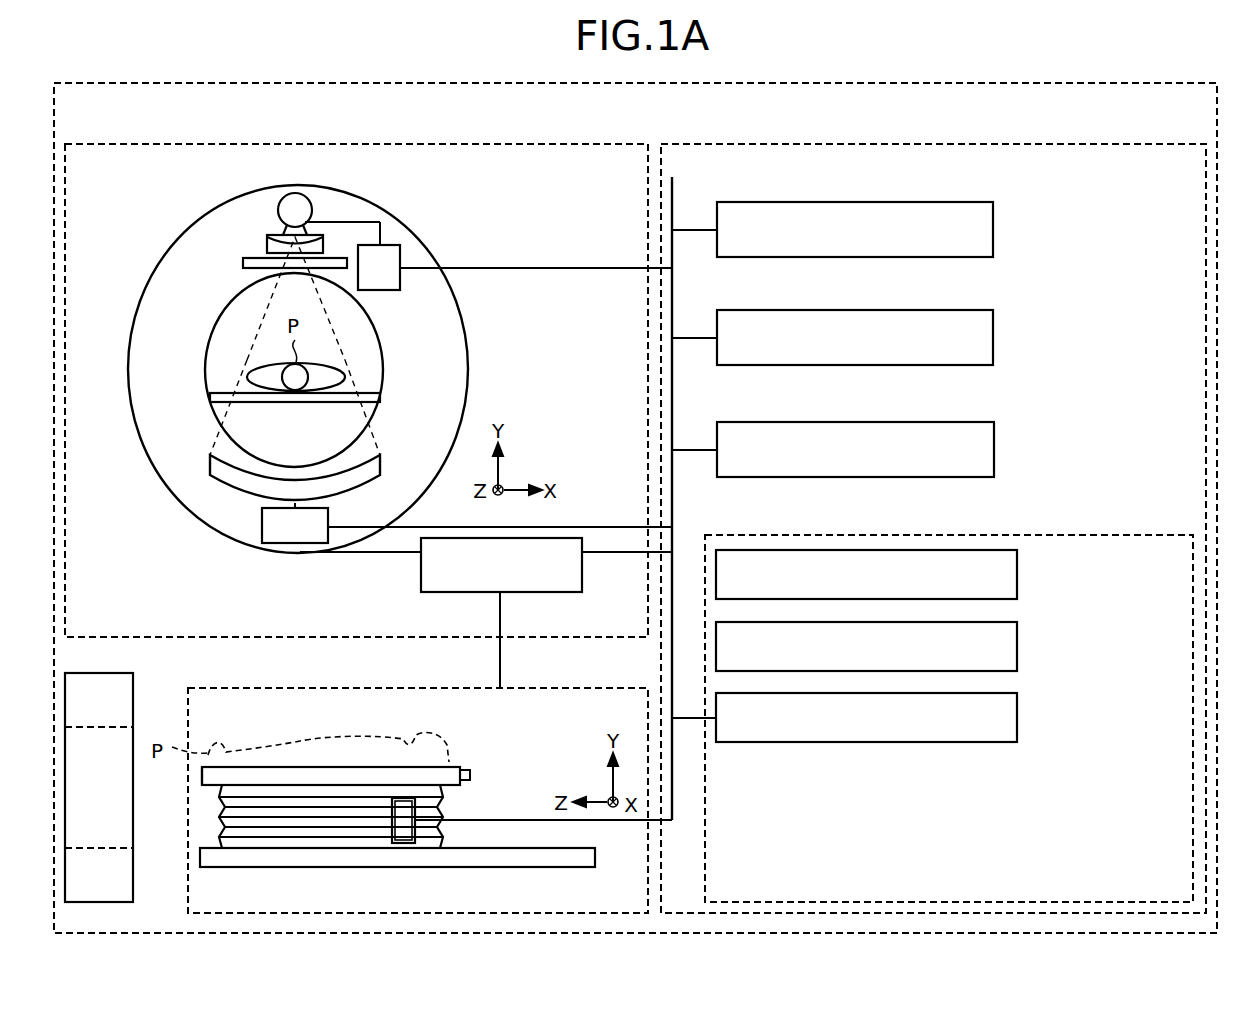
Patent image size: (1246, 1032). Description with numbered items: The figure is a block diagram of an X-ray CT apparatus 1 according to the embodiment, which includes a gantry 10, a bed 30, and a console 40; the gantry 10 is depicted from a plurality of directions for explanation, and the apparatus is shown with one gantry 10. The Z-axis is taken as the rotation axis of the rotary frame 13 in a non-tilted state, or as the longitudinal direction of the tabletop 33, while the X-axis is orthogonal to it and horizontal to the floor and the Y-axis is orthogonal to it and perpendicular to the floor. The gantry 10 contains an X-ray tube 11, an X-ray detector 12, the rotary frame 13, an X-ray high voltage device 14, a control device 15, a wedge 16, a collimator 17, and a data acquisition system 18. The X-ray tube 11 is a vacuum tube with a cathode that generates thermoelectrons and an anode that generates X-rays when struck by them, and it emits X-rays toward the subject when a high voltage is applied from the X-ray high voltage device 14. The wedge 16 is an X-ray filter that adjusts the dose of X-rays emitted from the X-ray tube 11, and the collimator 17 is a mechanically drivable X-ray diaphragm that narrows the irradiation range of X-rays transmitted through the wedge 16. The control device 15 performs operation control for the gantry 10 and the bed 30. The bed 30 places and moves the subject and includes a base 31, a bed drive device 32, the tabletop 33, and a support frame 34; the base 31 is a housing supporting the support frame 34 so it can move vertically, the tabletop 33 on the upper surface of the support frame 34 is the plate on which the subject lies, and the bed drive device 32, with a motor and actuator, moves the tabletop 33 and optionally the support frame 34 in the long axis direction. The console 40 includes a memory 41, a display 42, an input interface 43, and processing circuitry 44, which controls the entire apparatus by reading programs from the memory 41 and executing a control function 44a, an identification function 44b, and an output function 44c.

The X-ray CT apparatus 1 is at (1140, 82).
The gantry 10 is at (578, 144).
The X-ray tube 11 is at (280, 212).
The X-ray detector 12 is at (218, 482).
The rotary frame 13 is at (362, 198).
The X-ray high voltage device 14 is at (392, 290).
The control device 15 is at (421, 579).
The wedge 16 is at (267, 245).
The collimator 17 is at (243, 263).
The data acquisition system (DAS) 18 is at (262, 527).
The bed 30 is at (582, 688).
The base 31 is at (222, 812).
The bed drive device 32 is at (440, 813).
The tabletop 33 is at (216, 412).
The support frame 34 is at (202, 776).
The console 40 is at (913, 144).
The memory 41 is at (993, 229).
The display 42 is at (993, 338).
The input interface 43 is at (994, 450).
The processing circuitry 44 is at (1120, 535).
The control function 44a is at (1017, 575).
The identification function 44b is at (1017, 647).
The output function 44c is at (1017, 718).